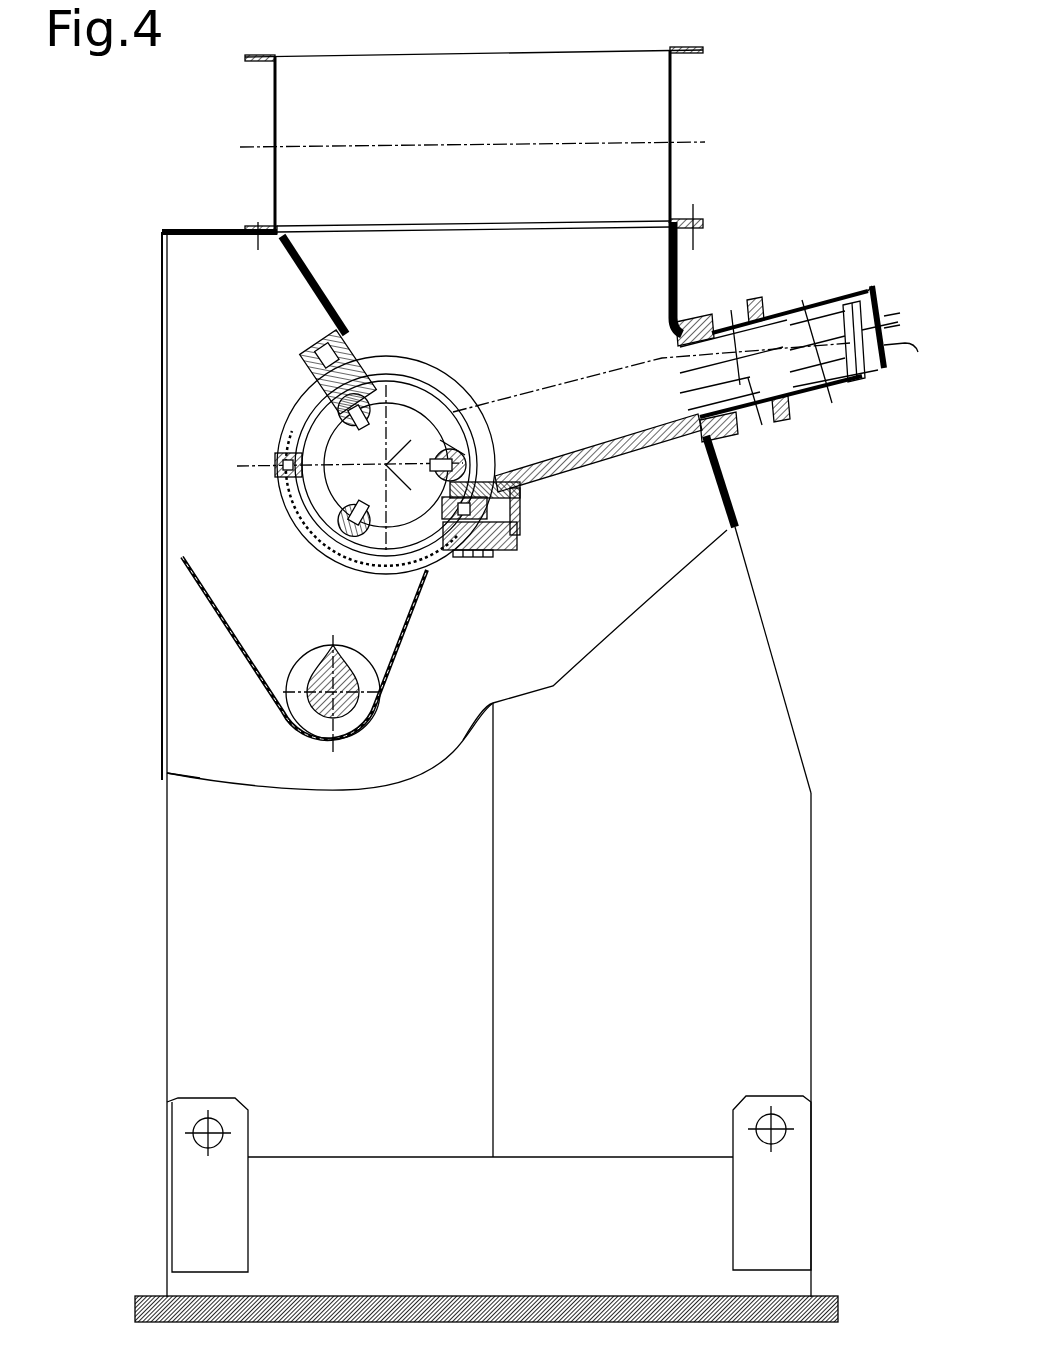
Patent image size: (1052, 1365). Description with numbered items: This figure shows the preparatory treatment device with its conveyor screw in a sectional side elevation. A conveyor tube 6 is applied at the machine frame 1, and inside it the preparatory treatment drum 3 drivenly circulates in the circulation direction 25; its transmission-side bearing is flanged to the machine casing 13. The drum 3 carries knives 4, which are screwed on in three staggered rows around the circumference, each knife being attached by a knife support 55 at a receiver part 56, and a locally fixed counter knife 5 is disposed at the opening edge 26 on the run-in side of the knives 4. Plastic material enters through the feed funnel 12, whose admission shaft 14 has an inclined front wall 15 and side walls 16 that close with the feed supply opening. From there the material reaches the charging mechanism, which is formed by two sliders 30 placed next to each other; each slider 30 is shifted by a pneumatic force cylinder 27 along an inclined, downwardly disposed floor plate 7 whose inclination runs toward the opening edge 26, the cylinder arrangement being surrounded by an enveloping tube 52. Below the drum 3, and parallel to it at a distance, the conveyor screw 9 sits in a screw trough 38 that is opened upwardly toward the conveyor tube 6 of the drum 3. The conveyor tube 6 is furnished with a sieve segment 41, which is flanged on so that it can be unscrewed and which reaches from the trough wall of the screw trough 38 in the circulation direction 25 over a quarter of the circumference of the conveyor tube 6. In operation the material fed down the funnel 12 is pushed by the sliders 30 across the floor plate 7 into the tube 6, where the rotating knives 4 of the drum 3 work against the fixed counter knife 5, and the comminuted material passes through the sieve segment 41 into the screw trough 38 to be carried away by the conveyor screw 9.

The machine frame 1 is at (620, 1177).
The preparatory treatment drum 3 is at (397, 447).
The knife of the preparatory treatment drum 4 is at (458, 445).
The locally fixed counter knife 5 is at (699, 495).
The conveyor tube 6 is at (673, 611).
The floor plate 7 is at (523, 463).
The conveyor screw 9 is at (303, 673).
The feed funnel 12 is at (272, 100).
The machine casing 13 is at (722, 465).
The admission shaft of the feed funnel 14 is at (345, 311).
The front wall of the feed funnel 15 is at (337, 338).
The side wall of the feed funnel 16 is at (506, 296).
The circulation direction of the preparatory treatment drum 25 is at (290, 480).
The opening edge of the feed supply opening 26 is at (492, 488).
The pneumatic force cylinder of the slider 27 is at (798, 337).
The slider of the charging mechanism 30 is at (710, 355).
The screw trough of the conveyor screw 38 is at (410, 653).
The sieve segment for the preparatory treatment drum 41 is at (323, 522).
The enveloping tube of the pneumatic slider 52 is at (857, 287).
The knife support for the knives 55 is at (675, 550).
The receiver part for the knife support 56 is at (705, 573).